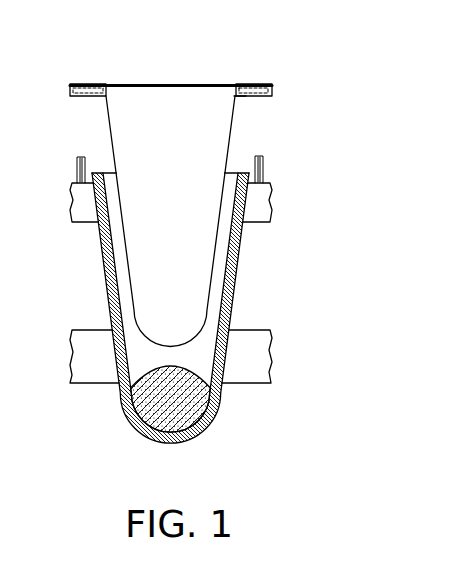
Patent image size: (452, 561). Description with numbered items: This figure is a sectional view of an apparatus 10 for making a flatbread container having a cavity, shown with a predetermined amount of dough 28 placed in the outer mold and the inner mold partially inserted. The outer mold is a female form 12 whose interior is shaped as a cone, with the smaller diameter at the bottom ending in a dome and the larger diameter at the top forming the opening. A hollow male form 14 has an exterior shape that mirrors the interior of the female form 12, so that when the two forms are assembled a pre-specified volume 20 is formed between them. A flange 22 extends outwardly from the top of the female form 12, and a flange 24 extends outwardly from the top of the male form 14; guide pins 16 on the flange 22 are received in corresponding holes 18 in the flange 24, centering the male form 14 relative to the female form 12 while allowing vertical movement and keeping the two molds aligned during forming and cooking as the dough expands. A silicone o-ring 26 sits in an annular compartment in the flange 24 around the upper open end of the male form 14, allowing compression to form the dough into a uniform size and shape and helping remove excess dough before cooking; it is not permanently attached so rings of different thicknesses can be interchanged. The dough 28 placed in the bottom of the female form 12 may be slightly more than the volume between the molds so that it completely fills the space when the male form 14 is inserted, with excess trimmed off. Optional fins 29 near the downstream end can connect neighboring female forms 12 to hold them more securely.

The apparatus for making a flatbread container 10 is at (166, 52).
The female form 12 is at (97, 228).
The male form 14 is at (128, 267).
The guide pins 16 is at (263, 164).
The holes 18 is at (258, 96).
The pre-specified volume 20 is at (118, 296).
The flange 22 is at (262, 203).
The flange 24 is at (271, 92).
The silicone o-ring 26 is at (241, 97).
The dough 28 is at (181, 418).
The fins 29 is at (252, 348).